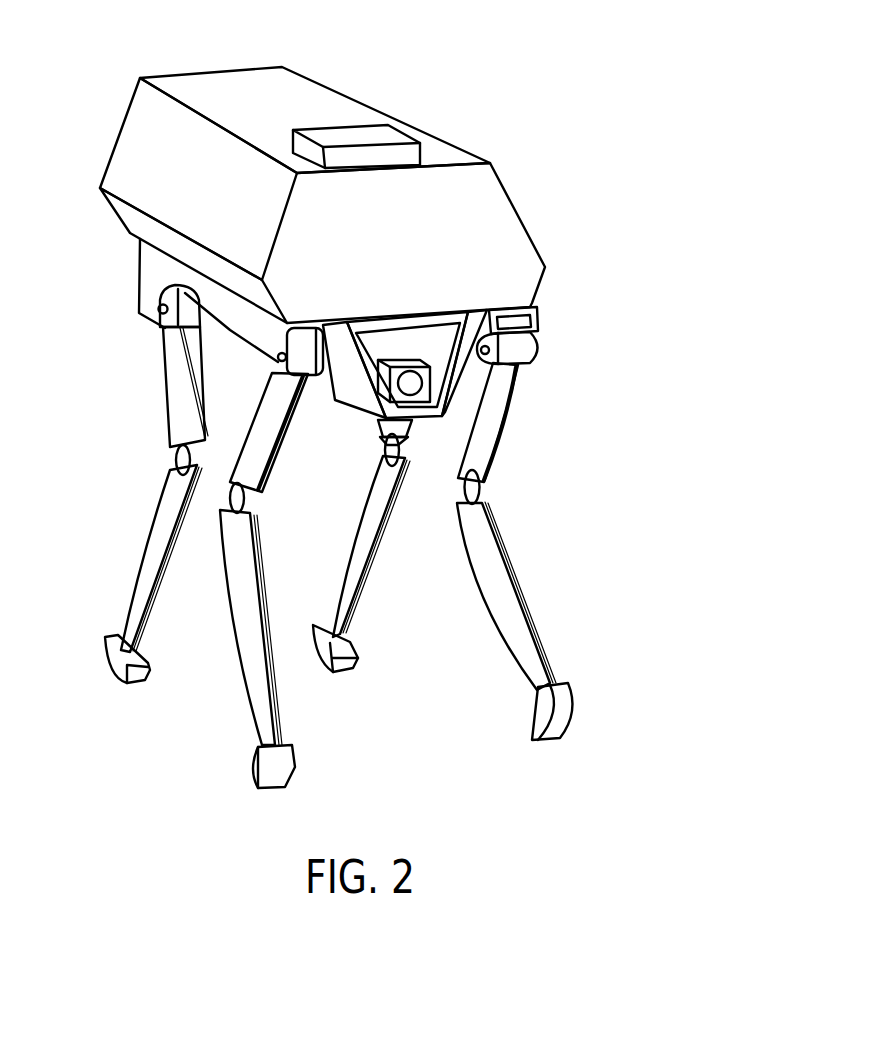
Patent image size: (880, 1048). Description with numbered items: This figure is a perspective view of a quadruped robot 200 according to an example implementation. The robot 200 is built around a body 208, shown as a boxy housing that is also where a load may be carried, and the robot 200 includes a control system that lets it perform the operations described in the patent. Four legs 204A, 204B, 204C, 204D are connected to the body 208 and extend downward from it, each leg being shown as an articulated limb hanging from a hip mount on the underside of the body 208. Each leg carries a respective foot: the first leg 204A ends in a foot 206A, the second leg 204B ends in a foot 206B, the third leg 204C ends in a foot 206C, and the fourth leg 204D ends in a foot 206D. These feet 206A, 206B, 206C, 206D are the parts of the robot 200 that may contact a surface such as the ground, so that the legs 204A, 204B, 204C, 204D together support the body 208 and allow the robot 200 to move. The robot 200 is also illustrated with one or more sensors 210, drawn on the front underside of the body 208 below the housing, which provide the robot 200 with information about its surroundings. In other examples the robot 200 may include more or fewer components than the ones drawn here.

The quadruped robot 200 is at (455, 65).
The leg 204A is at (145, 460).
The leg 204B is at (305, 727).
The leg 204C is at (375, 627).
The leg 204D is at (540, 585).
The foot 206A is at (132, 683).
The foot 206B is at (292, 767).
The foot 206C is at (358, 647).
The foot 206D is at (577, 722).
The body 208 is at (542, 278).
The sensor 210 is at (384, 352).